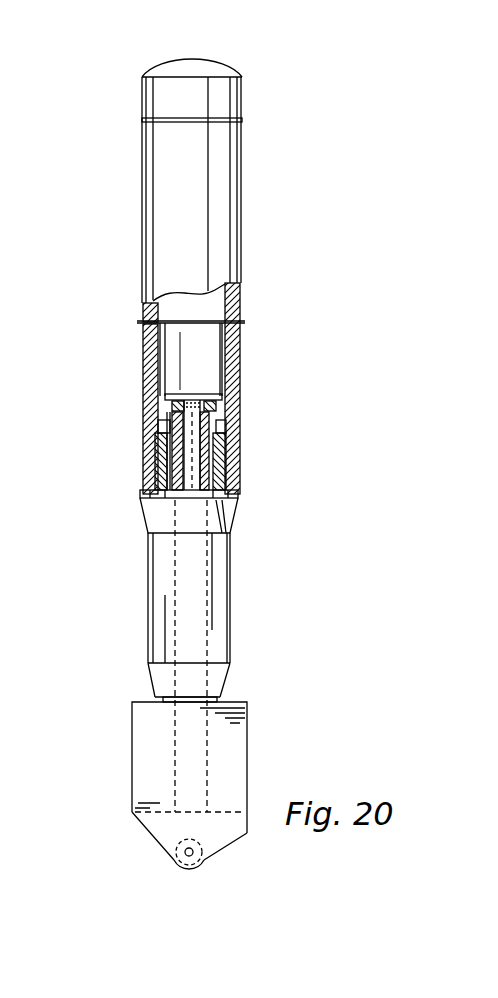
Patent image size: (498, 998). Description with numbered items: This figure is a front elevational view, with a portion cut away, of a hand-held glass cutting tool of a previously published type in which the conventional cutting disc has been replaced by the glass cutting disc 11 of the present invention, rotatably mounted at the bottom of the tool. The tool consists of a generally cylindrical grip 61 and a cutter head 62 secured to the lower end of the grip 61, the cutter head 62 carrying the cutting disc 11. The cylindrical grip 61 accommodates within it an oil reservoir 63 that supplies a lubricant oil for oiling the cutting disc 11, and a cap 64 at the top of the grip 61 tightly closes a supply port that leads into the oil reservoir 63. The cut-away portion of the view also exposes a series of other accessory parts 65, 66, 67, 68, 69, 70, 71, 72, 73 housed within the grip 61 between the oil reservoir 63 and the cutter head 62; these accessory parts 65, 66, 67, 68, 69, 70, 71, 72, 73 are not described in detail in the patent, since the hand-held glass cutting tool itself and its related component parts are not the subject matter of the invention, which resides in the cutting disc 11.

The glass cutting disc 11 is at (172, 856).
The grip 61 is at (147, 312).
The cutter head 62 is at (145, 778).
The oil reservoir 63 is at (165, 340).
The cap 64 is at (150, 98).
The accessory part 65 is at (157, 385).
The accessory part 66 is at (175, 408).
The accessory part 67 is at (162, 433).
The accessory part 68 is at (160, 462).
The accessory part 69 is at (155, 492).
The accessory part 70 is at (222, 398).
The accessory part 71 is at (225, 412).
The accessory part 72 is at (205, 420).
The accessory part 73 is at (212, 467).